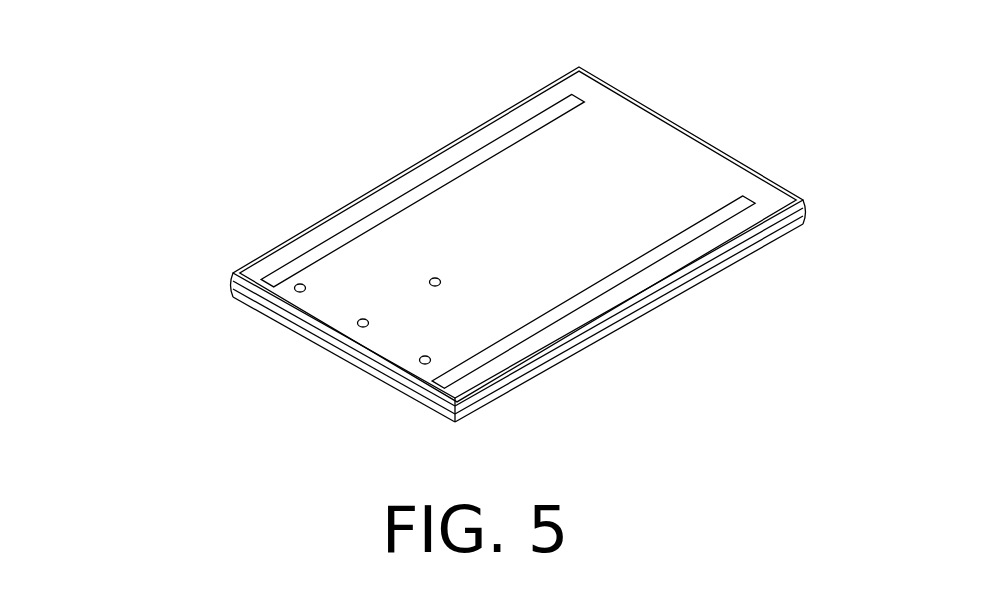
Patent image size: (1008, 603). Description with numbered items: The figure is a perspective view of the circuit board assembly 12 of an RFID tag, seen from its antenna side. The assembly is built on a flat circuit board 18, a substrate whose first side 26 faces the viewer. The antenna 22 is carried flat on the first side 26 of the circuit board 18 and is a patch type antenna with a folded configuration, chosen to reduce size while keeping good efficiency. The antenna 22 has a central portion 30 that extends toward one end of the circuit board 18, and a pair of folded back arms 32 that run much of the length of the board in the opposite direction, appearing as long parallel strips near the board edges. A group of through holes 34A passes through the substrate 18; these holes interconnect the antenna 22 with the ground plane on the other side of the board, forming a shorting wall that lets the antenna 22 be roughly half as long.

The circuit board assembly 12 is at (752, 75).
The circuit board 18 is at (233, 277).
The antenna 22 is at (612, 130).
The first side 26 is at (247, 302).
The central portion 30 is at (506, 244).
The folded back arms 32 is at (400, 192).
The through holes 34A is at (423, 369).